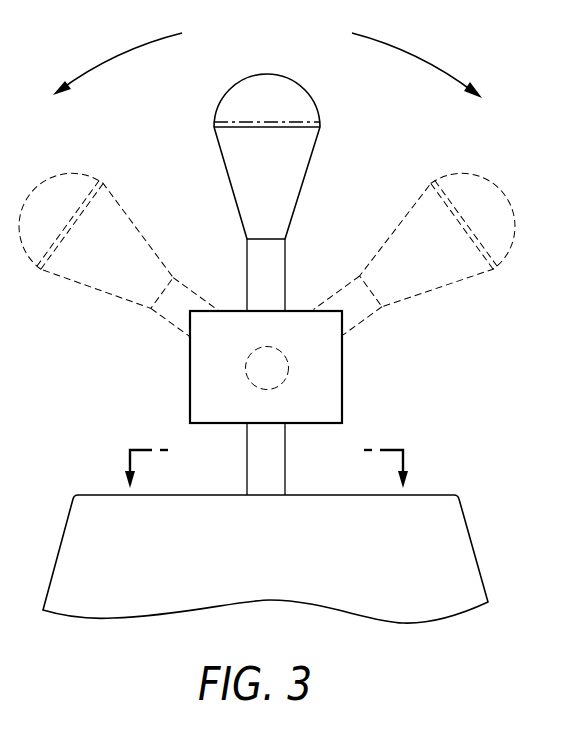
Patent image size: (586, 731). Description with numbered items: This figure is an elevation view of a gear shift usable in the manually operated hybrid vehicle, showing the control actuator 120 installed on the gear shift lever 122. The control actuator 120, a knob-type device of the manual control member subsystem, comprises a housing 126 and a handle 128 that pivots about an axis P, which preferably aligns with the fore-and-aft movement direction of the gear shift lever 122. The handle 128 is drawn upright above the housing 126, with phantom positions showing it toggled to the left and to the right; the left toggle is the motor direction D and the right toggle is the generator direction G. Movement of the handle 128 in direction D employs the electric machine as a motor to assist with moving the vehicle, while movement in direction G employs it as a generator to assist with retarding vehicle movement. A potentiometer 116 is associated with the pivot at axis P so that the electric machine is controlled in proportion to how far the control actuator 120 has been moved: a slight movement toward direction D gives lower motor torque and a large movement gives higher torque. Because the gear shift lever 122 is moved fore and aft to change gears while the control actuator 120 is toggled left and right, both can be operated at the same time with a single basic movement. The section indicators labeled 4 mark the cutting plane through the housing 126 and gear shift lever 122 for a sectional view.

The control actuator 120 is at (432, 371).
The handle 128 is at (302, 150).
The housing 126 is at (190, 357).
The gear shift lever 122 is at (252, 458).
The potentiometer 116 is at (288, 373).
The axis P is at (267, 367).
The motor direction D is at (103, 74).
The generator direction G is at (433, 74).
The section line 4- 4 is at (267, 473).